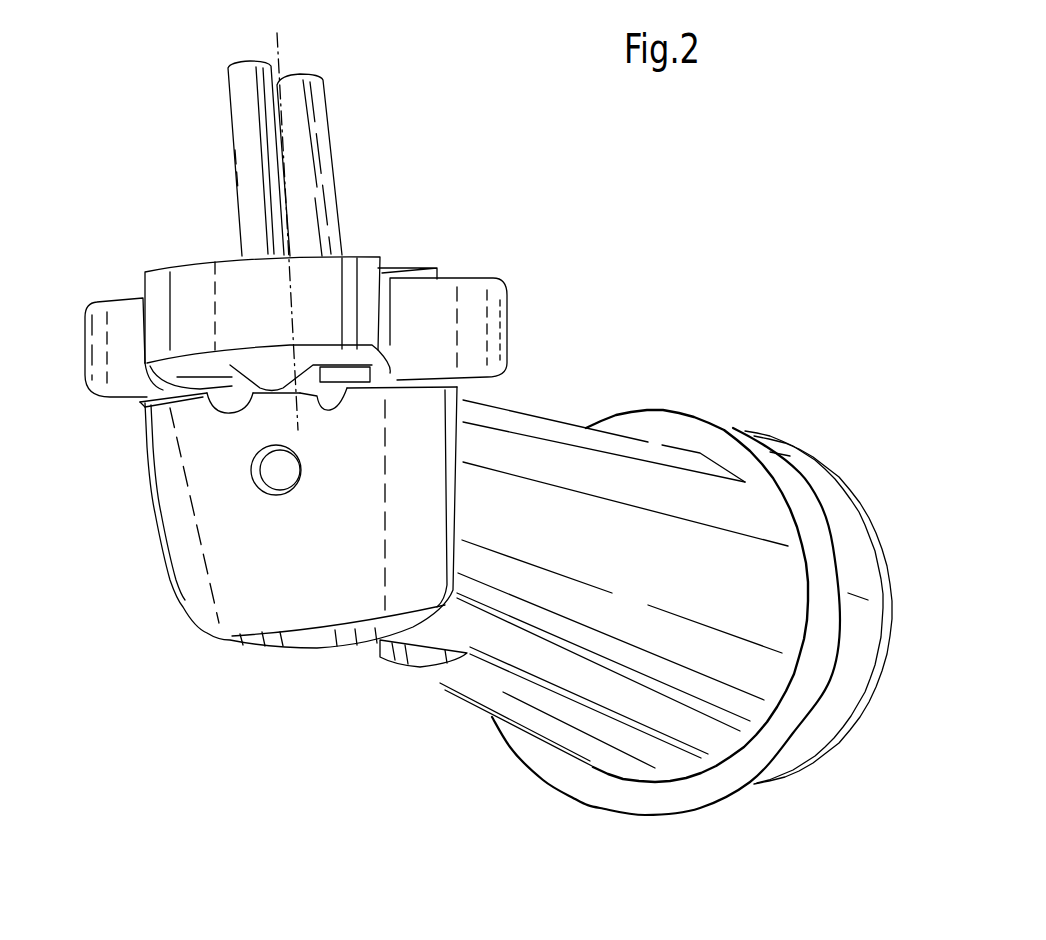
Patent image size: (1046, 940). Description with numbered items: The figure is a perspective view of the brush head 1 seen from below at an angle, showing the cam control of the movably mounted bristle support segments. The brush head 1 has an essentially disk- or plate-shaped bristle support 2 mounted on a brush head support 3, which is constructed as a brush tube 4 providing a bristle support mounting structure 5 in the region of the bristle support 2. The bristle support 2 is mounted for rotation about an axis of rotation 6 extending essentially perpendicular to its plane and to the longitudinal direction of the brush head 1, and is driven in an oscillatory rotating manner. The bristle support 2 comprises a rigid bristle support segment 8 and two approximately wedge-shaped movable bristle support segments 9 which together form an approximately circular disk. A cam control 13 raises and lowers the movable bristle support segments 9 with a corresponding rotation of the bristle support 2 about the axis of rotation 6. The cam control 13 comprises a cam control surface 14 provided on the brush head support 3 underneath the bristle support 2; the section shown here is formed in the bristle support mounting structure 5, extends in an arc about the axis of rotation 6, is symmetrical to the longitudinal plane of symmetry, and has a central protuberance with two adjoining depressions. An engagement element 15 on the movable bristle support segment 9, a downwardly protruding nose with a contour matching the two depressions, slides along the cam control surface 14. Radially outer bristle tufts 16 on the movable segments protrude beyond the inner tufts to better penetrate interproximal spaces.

The brush head 1 is at (557, 254).
The bristle support 2 is at (440, 259).
The brush head support 3 is at (452, 699).
The brush tube 4 is at (553, 427).
The bristle support mounting structure 5 is at (160, 440).
The axis of rotation 6 is at (277, 37).
The rigid bristle support segment 8 is at (97, 352).
The movable bristle support segment 9 is at (174, 271).
The cam control 13 is at (330, 411).
The cam control surface 14 is at (222, 412).
The engagement element 15 is at (147, 402).
The radially outer bristle tufts 16 is at (322, 134).